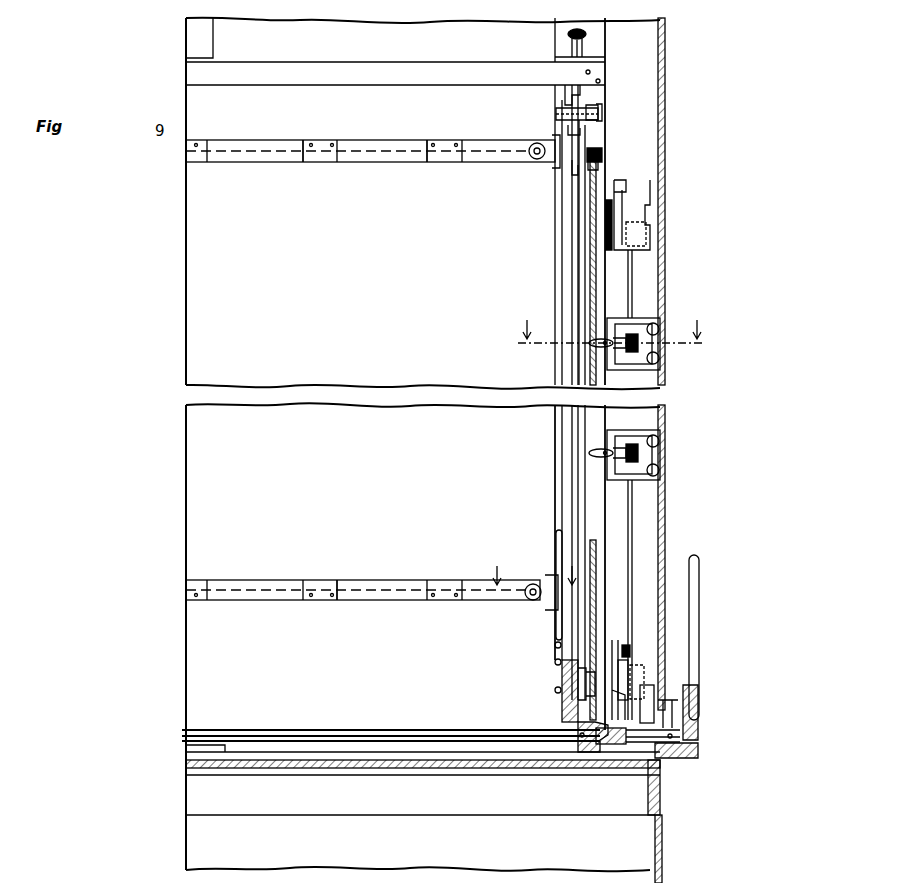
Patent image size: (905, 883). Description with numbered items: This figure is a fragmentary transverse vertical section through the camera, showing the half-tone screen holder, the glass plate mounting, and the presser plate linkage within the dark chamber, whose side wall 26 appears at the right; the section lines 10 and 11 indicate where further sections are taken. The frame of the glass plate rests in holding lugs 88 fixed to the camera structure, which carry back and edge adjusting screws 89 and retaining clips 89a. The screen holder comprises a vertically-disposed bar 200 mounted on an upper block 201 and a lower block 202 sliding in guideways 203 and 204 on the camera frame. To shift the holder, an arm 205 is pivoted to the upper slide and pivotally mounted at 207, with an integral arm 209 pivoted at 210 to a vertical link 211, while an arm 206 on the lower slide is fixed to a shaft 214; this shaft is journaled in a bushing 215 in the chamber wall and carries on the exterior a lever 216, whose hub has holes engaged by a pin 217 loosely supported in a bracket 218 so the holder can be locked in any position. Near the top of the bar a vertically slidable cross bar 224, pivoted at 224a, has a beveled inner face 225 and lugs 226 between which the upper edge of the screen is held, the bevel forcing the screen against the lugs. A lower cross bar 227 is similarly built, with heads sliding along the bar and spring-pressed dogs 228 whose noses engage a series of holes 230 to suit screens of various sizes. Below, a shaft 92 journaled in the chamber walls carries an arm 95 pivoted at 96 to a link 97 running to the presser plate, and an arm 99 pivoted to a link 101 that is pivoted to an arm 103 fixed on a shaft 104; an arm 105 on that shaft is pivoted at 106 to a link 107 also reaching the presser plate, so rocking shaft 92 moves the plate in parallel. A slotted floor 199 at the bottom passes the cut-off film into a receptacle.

The section line 10- 10 is at (612, 324).
The section line 11- 11 is at (539, 566).
The side wall 26 is at (665, 380).
The holding lug 88 is at (640, 318).
The adjusting screw 89 is at (659, 358).
The retaining clip 89a is at (598, 347).
The shaft 92 is at (638, 748).
The arm 95 is at (628, 672).
The pivot 96 is at (630, 651).
The link 97 is at (612, 640).
The arm 99 is at (655, 700).
The link 101 is at (632, 296).
The arm 103 is at (646, 233).
The shaft 104 is at (605, 246).
The arm 105 is at (650, 210).
The pivot 106 is at (626, 186).
The link 107 is at (600, 190).
The floor 199 is at (402, 768).
The vertically-disposed bar 200 is at (555, 448).
The block 201 is at (556, 114).
The block 202 is at (562, 688).
The guideway 203 is at (572, 88).
The guideway 204 is at (562, 706).
The arm 205 is at (598, 112).
The arm 206 is at (575, 740).
The pivot 207 is at (575, 175).
The arm 209 is at (602, 152).
The pivot 210 is at (600, 164).
The link 211 is at (590, 260).
The shaft 214 is at (340, 730).
The bushing 215 is at (660, 780).
The lever 216 is at (700, 710).
The pin 217 is at (680, 722).
The bracket 218 is at (654, 692).
The cross bar 224 is at (393, 162).
The pivot 224a is at (537, 143).
The bevel 225 is at (242, 160).
The lug 226 is at (300, 162).
The lower cross bar 227 is at (398, 556).
The spring-pressed dog 228 is at (556, 548).
The hole 230 is at (555, 650).